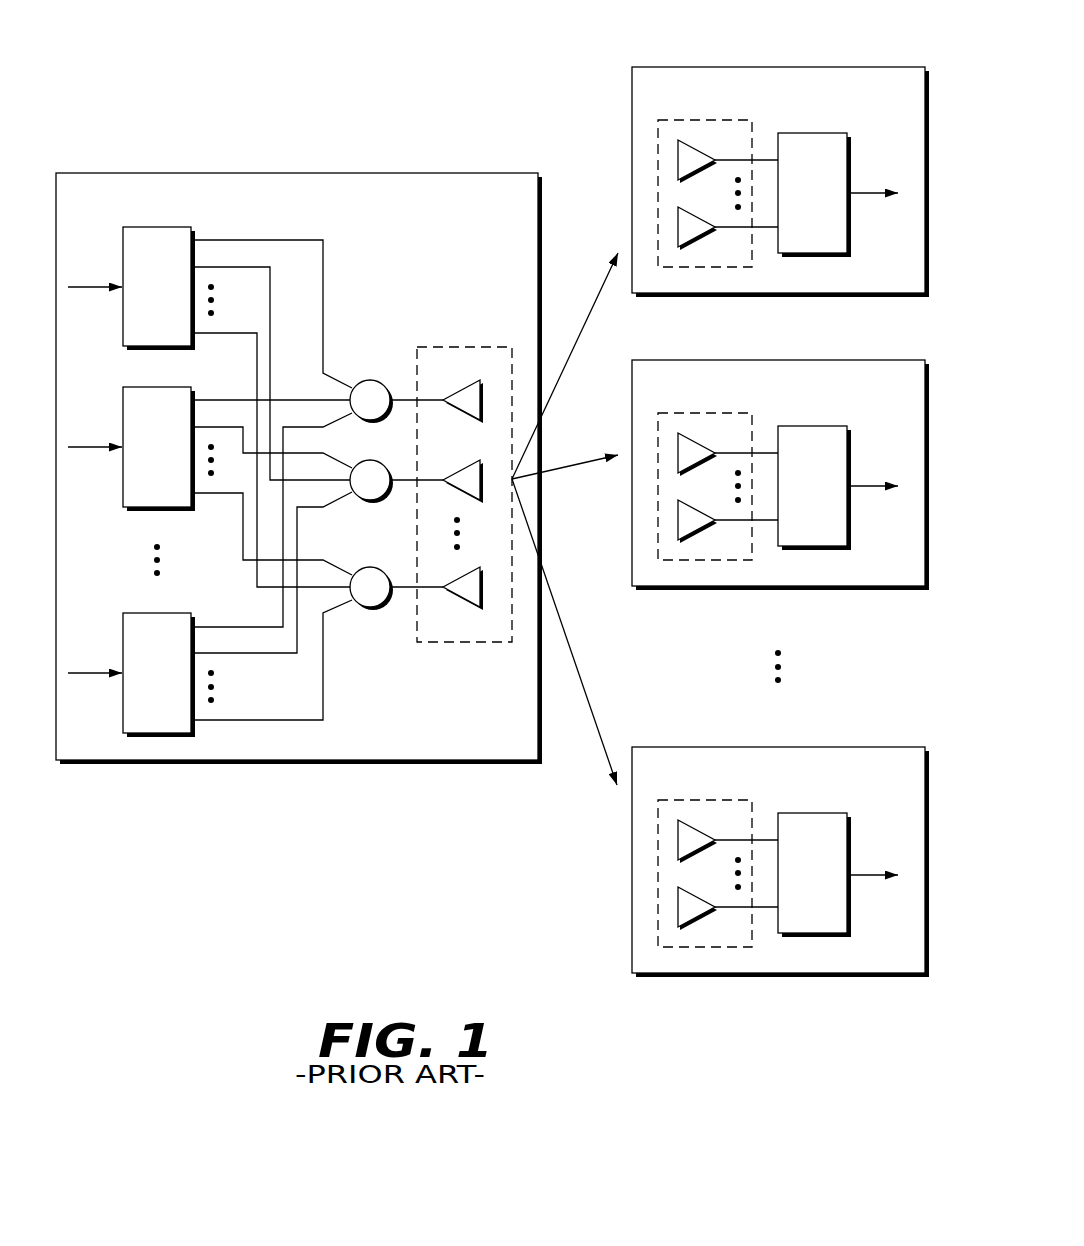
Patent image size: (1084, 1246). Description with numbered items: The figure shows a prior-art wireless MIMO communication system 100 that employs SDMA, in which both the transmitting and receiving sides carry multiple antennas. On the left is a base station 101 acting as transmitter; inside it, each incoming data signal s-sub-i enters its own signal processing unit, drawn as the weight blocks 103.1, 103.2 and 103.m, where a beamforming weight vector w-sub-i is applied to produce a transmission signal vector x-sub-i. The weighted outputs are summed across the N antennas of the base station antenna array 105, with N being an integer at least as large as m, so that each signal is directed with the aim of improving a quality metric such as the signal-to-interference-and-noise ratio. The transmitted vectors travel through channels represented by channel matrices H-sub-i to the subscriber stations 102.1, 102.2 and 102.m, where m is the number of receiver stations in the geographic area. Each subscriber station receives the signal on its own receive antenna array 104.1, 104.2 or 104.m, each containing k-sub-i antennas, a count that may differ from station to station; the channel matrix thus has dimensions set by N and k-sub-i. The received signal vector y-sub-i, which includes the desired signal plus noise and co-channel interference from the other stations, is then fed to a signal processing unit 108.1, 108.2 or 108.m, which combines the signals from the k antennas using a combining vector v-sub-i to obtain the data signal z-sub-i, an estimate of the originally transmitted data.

The wireless MIMO communication system 100 is at (233, 48).
The base station 101 is at (320, 172).
The signal processing unit 103.1 is at (177, 349).
The signal processing unit 103.2 is at (163, 511).
The signal processing unit 103.m is at (163, 612).
The base station antenna array 105 is at (460, 347).
The subscriber station 102.1 is at (802, 66).
The subscriber station 102.2 is at (802, 359).
The subscriber station 102.m is at (802, 746).
The subscriber station antenna array 104.1 is at (727, 118).
The subscriber station antenna array 104.2 is at (727, 412).
The subscriber station antenna array 104.m is at (726, 799).
The signal processing unit 108.1 is at (822, 132).
The signal processing unit 108.2 is at (822, 425).
The signal processing unit 108.m is at (822, 813).